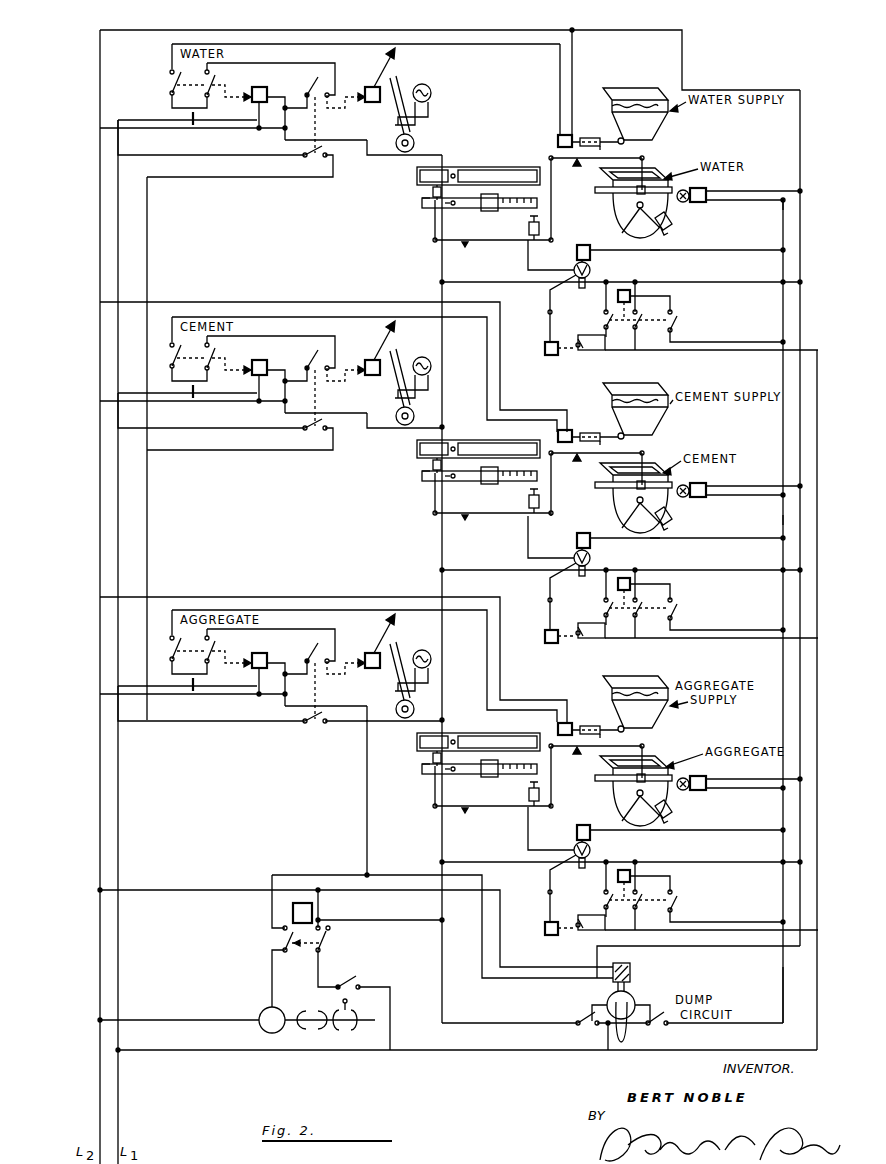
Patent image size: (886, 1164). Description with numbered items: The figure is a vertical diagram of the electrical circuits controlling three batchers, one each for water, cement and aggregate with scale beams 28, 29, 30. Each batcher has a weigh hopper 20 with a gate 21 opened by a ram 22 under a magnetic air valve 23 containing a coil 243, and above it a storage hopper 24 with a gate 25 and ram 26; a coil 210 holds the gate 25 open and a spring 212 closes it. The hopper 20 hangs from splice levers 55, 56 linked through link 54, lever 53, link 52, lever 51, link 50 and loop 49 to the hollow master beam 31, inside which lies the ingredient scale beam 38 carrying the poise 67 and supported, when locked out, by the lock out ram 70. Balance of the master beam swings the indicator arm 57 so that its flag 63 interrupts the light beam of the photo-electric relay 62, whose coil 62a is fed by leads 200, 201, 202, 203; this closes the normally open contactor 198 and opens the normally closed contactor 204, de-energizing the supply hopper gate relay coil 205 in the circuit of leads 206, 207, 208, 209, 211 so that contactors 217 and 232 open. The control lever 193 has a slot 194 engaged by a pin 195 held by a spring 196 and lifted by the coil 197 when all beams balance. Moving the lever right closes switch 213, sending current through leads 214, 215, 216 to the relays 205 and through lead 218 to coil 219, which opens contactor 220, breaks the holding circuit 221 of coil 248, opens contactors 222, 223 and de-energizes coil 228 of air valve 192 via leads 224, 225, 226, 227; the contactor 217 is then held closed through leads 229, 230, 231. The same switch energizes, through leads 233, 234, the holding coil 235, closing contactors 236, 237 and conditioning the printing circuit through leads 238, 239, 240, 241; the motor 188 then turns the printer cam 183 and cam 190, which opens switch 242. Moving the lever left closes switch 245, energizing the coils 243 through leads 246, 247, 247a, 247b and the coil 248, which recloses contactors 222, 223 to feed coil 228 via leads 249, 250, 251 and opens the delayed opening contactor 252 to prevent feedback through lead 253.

The weigh hopper 20 is at (622, 214).
The gate 21 is at (641, 226).
The ram 22 is at (672, 224).
The magnetic air valve 23 is at (686, 204).
The storage hopper 24 is at (650, 133).
The gate 25 is at (652, 142).
The ram 26 is at (602, 447).
The scale beam 28 is at (458, 208).
The scale beam 29 is at (458, 481).
The scale beam 30 is at (458, 774).
The hollow master beam 31 is at (485, 167).
The ingredient scale beam 38 is at (422, 203).
The loop 49 is at (432, 191).
The link 50 is at (433, 228).
The lever 51 is at (464, 242).
The link 52 is at (553, 210).
The lever 53 is at (551, 156).
The link 54 is at (645, 167).
The splice lever 55 is at (700, 775).
The splice lever 56 is at (606, 190).
The indicator arm 57 is at (398, 56).
The photo-electric relay 62 is at (431, 89).
The coil 62a is at (364, 365).
The flag 63 is at (408, 80).
The poise 67 is at (492, 196).
The lock out ram 70 is at (528, 229).
The cam 183 is at (310, 1010).
The electric motor 188 is at (260, 1011).
The cam 190 is at (352, 1014).
The magnetic air valve 192 is at (574, 276).
The control lever 193 is at (628, 1036).
The slot 194 is at (634, 997).
The pin 195 is at (616, 990).
The spring 196 is at (632, 972).
The electro-magnetic coil 197 is at (628, 966).
The normally open contactor 198 is at (305, 158).
The lead 200 is at (102, 984).
The lead 201 is at (430, 118).
The lead 202 is at (158, 118).
The lead 203 is at (149, 208).
The normally closed contactor 204 is at (331, 391).
The supply hopper gate relay coil 205 is at (265, 653).
The lead 206 is at (178, 735).
The lead 207 is at (168, 94).
The lead 208 is at (172, 48).
The lead 209 is at (558, 73).
The coil 210 is at (556, 136).
The lead 211 is at (344, 33).
The spring 212 is at (592, 136).
The normally open switch 213 is at (576, 1028).
The lead 214 is at (442, 262).
The lead 215 is at (367, 160).
The lead 216 is at (202, 130).
The normally open gate contactor 217 is at (170, 84).
The lead 218 is at (476, 286).
The coil 219 is at (546, 356).
The normally closed contactor 220 is at (582, 350).
The holding circuit 221 is at (610, 350).
The normally open contactor 222 is at (598, 906).
The normally open contactor 223 is at (650, 620).
The lead 224 is at (612, 274).
The lead 225 is at (600, 251).
The lead 226 is at (678, 251).
The lead 227 is at (802, 227).
The coil 228 is at (577, 253).
The lead 229 is at (262, 105).
The lead 230 is at (300, 63).
The lead 231 is at (196, 369).
The normally open contactor 232 is at (213, 86).
The lead 233 is at (320, 900).
The lead 234 is at (224, 890).
The holding coil 235 is at (293, 911).
The normally open contactor 236 is at (283, 941).
The normally open contactor 237 is at (328, 941).
The lead 238 is at (291, 1051).
The lead 239 is at (378, 1020).
The lead 240 is at (320, 970).
The lead 241 is at (330, 929).
The switch 242 is at (362, 983).
The coil 243 is at (700, 203).
The switch 245 is at (668, 1030).
The lead 246 is at (605, 1040).
The lead 247 is at (783, 229).
The lead 247a is at (736, 202).
The lead 247b is at (765, 188).
The coil 248 is at (636, 295).
The lead 249 is at (715, 342).
The lead 250 is at (672, 302).
The lead 251 is at (578, 339).
The delayed opening contactor 252 is at (675, 321).
The lead 253 is at (548, 313).